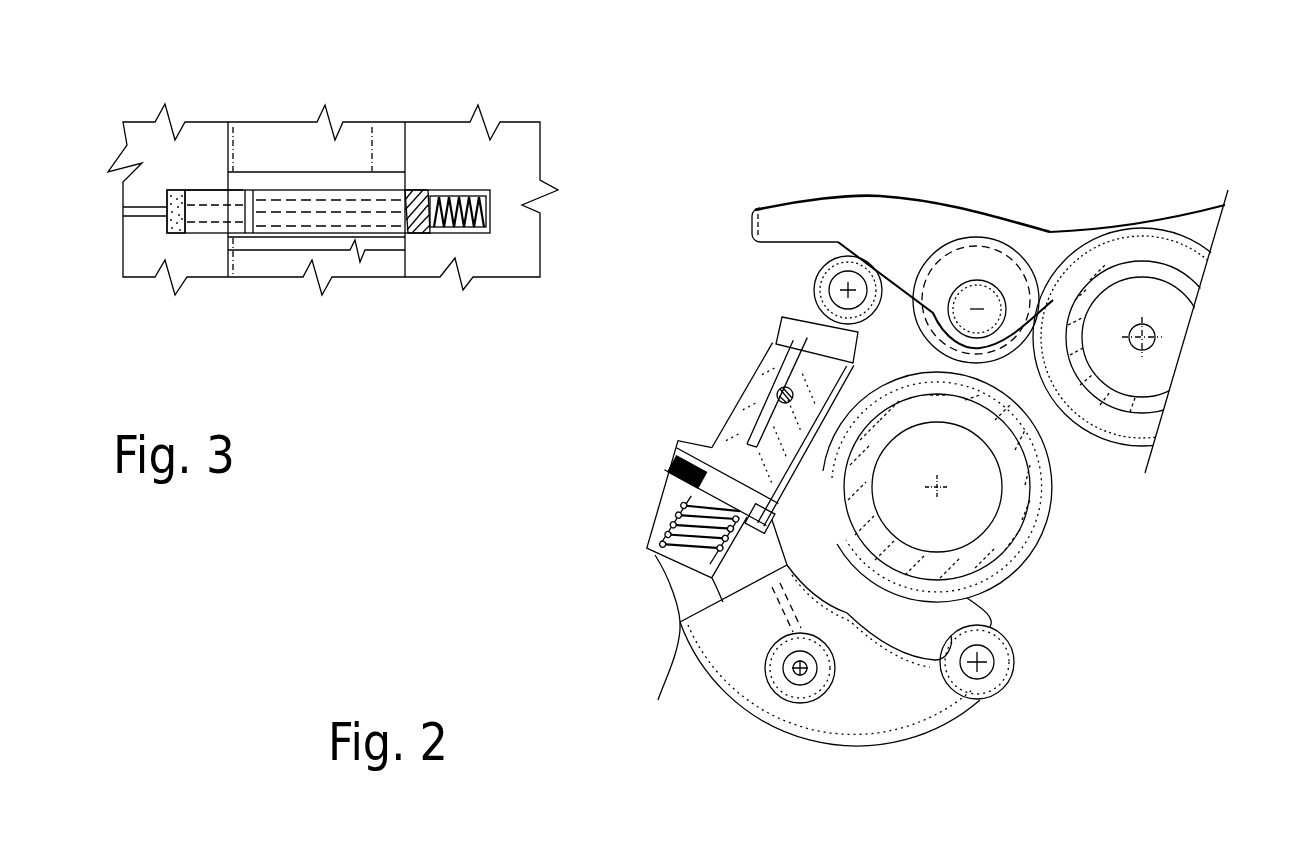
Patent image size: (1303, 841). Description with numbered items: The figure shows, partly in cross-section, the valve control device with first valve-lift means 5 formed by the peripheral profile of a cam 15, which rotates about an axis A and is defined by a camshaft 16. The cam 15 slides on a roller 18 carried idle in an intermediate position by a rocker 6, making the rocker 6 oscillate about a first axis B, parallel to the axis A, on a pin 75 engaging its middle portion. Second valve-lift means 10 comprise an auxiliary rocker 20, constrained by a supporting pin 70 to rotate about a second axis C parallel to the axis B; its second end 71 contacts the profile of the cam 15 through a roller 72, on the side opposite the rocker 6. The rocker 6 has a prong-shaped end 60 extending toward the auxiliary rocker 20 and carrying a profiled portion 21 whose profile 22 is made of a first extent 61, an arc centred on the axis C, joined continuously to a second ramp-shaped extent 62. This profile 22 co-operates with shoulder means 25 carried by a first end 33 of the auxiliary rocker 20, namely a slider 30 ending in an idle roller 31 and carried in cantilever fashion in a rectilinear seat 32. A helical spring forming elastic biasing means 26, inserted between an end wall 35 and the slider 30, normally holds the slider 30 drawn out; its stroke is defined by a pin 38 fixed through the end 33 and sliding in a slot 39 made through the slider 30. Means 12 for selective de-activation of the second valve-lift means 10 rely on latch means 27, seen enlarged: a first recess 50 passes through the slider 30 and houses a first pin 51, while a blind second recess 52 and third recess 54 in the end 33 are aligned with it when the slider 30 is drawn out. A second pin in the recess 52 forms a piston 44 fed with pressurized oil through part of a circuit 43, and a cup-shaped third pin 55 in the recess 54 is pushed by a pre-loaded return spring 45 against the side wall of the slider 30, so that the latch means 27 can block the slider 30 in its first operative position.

In FIG. 2, the first valve-lift means 5 is at (1040, 590).
In FIG. 2, the rocker 6 is at (1063, 258).
In FIG. 2, the second valve-lift means 10 is at (672, 401).
In FIG. 2, the means for selective de-activation 12 is at (615, 708).
In FIG. 2, the cam 15 is at (1025, 563).
In FIG. 2, the camshaft 16 is at (1023, 467).
In FIG. 2, the roller 18 is at (973, 236).
In FIG. 2, the auxiliary rocker 20 is at (850, 723).
In FIG. 2, the profiled portion 21 is at (872, 197).
In FIG. 2, the profile 22 is at (822, 250).
In FIG. 2, the shoulder means 25 is at (742, 290).
In FIG. 2, the elastic biasing means 26 is at (668, 592).
In FIG. 3, the latch means 27 is at (350, 312).
In FIG. 2, the latch means 27 is at (658, 498).
In FIG. 3, the slider 30 is at (283, 138).
In FIG. 2, the idle roller 31 is at (878, 270).
In FIG. 3, the rectilinear seat 32 is at (390, 142).
In FIG. 2, the rectilinear seat 32 is at (745, 437).
In FIG. 3, the first end 33 is at (450, 135).
In FIG. 2, the first end 33 is at (634, 562).
In FIG. 2, the end wall 35 is at (668, 612).
In FIG. 2, the pin 38 is at (867, 420).
In FIG. 2, the slot 39 is at (785, 385).
In FIG. 3, the circuit 43 is at (162, 212).
In FIG. 2, the circuit 43 is at (728, 690).
In FIG. 3, the piston 44 is at (218, 207).
In FIG. 2, the piston 44 is at (800, 507).
In FIG. 3, the return spring 45 is at (467, 205).
In FIG. 2, the return spring 45 is at (672, 461).
In FIG. 3, the first recess 50 is at (327, 232).
In FIG. 3, the first pin 51 is at (352, 205).
In FIG. 3, the second recess 52 is at (173, 190).
In FIG. 3, the third recess 54 is at (415, 212).
In FIG. 3, the third pin 55 is at (403, 210).
In FIG. 2, the prong-shaped end 60 is at (785, 222).
In FIG. 2, the first extent 61 is at (758, 244).
In FIG. 2, the second ramp-shaped extent 62 is at (878, 250).
In FIG. 2, the supporting pin 70 is at (823, 668).
In FIG. 2, the second end 71 is at (975, 697).
In FIG. 2, the roller 72 is at (1015, 658).
In FIG. 2, the pin 75 is at (1165, 347).
In FIG. 2, the axis A is at (945, 485).
In FIG. 2, the first axis B is at (1147, 342).
In FIG. 2, the second axis C is at (797, 670).